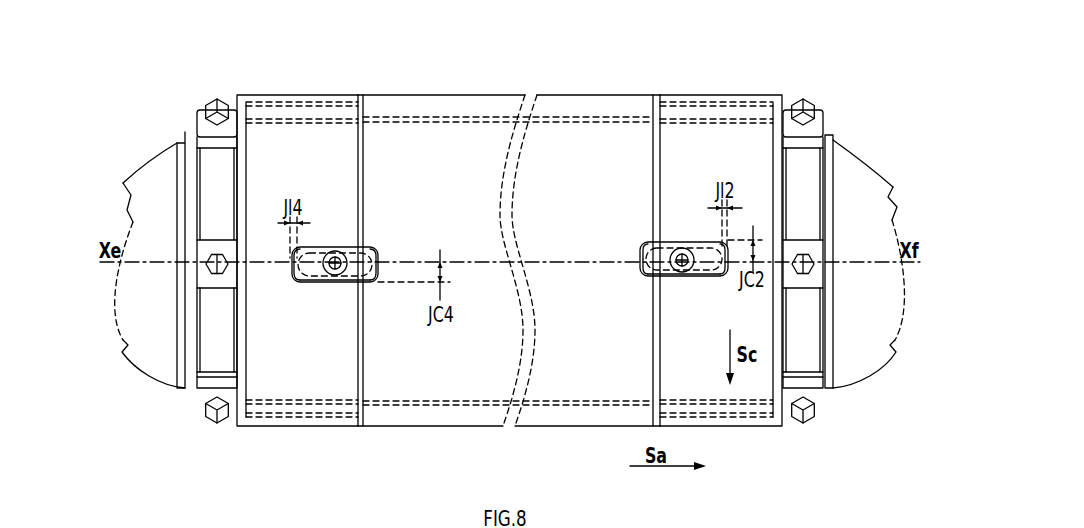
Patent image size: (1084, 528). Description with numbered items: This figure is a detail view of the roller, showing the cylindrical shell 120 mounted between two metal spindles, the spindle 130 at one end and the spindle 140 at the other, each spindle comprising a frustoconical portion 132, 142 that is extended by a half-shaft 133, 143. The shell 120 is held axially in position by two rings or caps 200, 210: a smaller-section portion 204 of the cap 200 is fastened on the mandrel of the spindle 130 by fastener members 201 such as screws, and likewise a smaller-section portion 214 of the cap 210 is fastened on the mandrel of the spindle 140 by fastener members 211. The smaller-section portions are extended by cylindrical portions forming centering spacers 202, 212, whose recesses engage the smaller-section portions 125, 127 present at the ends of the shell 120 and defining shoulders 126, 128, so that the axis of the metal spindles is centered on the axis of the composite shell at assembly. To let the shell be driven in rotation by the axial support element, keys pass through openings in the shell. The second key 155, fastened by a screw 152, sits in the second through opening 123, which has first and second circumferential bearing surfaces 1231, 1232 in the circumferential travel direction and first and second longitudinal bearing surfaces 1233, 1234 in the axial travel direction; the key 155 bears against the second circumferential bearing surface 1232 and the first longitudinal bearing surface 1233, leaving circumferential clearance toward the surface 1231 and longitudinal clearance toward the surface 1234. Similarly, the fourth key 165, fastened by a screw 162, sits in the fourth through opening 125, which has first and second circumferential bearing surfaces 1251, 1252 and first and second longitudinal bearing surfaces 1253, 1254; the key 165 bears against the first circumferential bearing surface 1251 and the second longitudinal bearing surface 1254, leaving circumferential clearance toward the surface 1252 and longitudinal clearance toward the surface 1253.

The cylindrical shell 120 is at (582, 95).
The second through opening 123 is at (647, 243).
The fourth through opening 125 is at (727, 100).
The shoulder 126 is at (663, 98).
The smaller-section portion 127 is at (300, 112).
The shoulder 128 is at (354, 103).
The spindle 130 is at (847, 134).
The frustoconical portion 132 is at (860, 163).
The half-shaft 133 is at (892, 207).
The spindle 140 is at (160, 352).
The frustoconical portion 142 is at (168, 160).
The half-shaft 143 is at (128, 211).
The screw 152 is at (660, 276).
The second key 155 is at (673, 276).
The screw 162 is at (350, 247).
The fourth key 165 is at (318, 256).
The cap 200 is at (753, 138).
The fastener members 201 is at (798, 100).
The centering spacer 202 is at (748, 97).
The smaller-section portion 204 is at (810, 302).
The cap 210 is at (258, 176).
The fastener members 211 is at (208, 100).
The centering spacer 212 is at (272, 95).
The smaller-section portion 214 is at (220, 315).
The first circumferential bearing surface 1231 is at (698, 246).
The second circumferential bearing surface 1232 is at (646, 277).
The first longitudinal bearing surface 1233 is at (645, 247).
The second longitudinal bearing surface 1234 is at (718, 277).
The first circumferential bearing surface 1251 is at (311, 256).
The second circumferential bearing surface 1252 is at (360, 283).
The first longitudinal bearing surface 1253 is at (296, 284).
The second longitudinal bearing surface 1254 is at (372, 258).